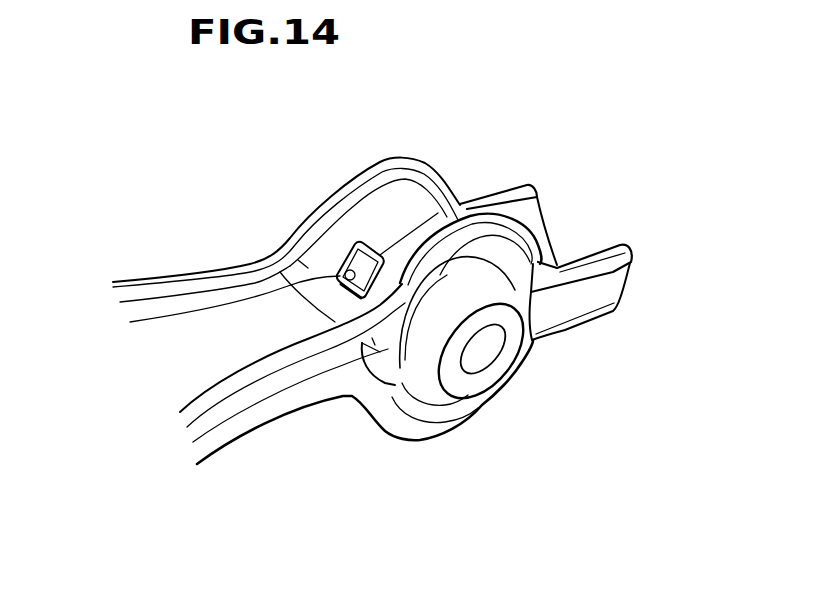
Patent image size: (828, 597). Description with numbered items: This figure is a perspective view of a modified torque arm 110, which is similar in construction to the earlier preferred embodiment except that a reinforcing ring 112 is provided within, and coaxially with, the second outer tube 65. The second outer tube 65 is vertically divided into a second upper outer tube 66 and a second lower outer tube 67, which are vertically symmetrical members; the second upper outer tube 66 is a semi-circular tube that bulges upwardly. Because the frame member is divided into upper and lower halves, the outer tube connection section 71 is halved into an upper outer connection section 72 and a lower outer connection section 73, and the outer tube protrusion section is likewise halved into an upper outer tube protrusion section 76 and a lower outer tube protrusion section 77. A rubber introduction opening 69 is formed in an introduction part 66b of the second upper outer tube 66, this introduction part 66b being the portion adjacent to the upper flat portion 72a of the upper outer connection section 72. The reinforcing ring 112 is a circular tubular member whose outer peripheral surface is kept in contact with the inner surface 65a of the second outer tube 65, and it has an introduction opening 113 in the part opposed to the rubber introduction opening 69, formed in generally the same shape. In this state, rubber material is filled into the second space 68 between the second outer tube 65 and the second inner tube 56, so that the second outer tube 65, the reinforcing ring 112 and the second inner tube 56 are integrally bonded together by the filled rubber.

The modified torque arm 110 is at (210, 194).
The upper flat portion 72a is at (183, 343).
The second upper outer tube 66 is at (418, 222).
The introduction part 66b is at (345, 258).
The rubber introduction opening 69 is at (285, 282).
The introduction opening 113 is at (377, 252).
The outer tube connection section 71 is at (297, 508).
The upper outer connection section 72 is at (232, 390).
The lower outer connection section 73 is at (212, 447).
The reinforcing ring 112 is at (368, 360).
The inner surface 65a is at (393, 388).
The second outer tube 65 is at (683, 80).
The upper outer tube protrusion section 76 is at (542, 230).
The second inner tube 56 is at (470, 297).
The second lower outer tube 67 is at (483, 405).
The lower outer tube protrusion section 77 is at (587, 322).
The second space 68 is at (430, 308).